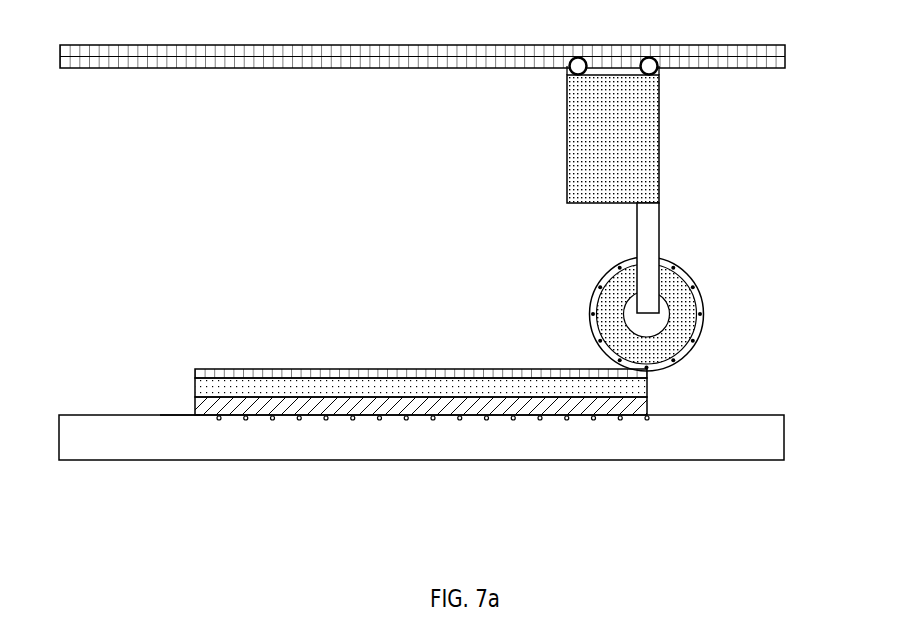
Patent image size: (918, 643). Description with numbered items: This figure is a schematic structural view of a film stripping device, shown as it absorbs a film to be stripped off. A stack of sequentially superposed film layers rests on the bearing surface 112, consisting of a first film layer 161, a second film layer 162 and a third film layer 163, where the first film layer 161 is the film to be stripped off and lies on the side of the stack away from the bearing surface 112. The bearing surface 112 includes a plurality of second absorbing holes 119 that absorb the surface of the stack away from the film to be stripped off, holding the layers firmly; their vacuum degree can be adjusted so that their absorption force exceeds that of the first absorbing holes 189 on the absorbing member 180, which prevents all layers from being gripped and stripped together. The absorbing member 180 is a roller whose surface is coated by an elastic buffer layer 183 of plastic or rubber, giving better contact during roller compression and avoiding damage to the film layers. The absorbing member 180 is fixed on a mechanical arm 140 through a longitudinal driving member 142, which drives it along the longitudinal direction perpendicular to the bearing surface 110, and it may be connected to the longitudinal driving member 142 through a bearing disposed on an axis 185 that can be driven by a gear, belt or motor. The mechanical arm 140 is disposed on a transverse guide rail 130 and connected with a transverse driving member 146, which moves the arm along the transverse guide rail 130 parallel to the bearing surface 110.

The bearing surface 110 is at (425, 480).
The bearing surface 112 is at (132, 375).
The second absorbing holes 119 is at (433, 494).
The transverse guide rail 130 is at (422, 94).
The mechanical arm 140 is at (552, 134).
The longitudinal driving member 142 is at (721, 239).
The transverse driving member 146 is at (668, 94).
The first film layer 161 is at (421, 485).
The second film layer 162 is at (421, 475).
The third film layer 163 is at (437, 471).
The absorbing member 180 is at (651, 299).
The buffer layer 183 is at (597, 296).
The axis 185 is at (698, 302).
The first absorbing holes 189 is at (714, 314).